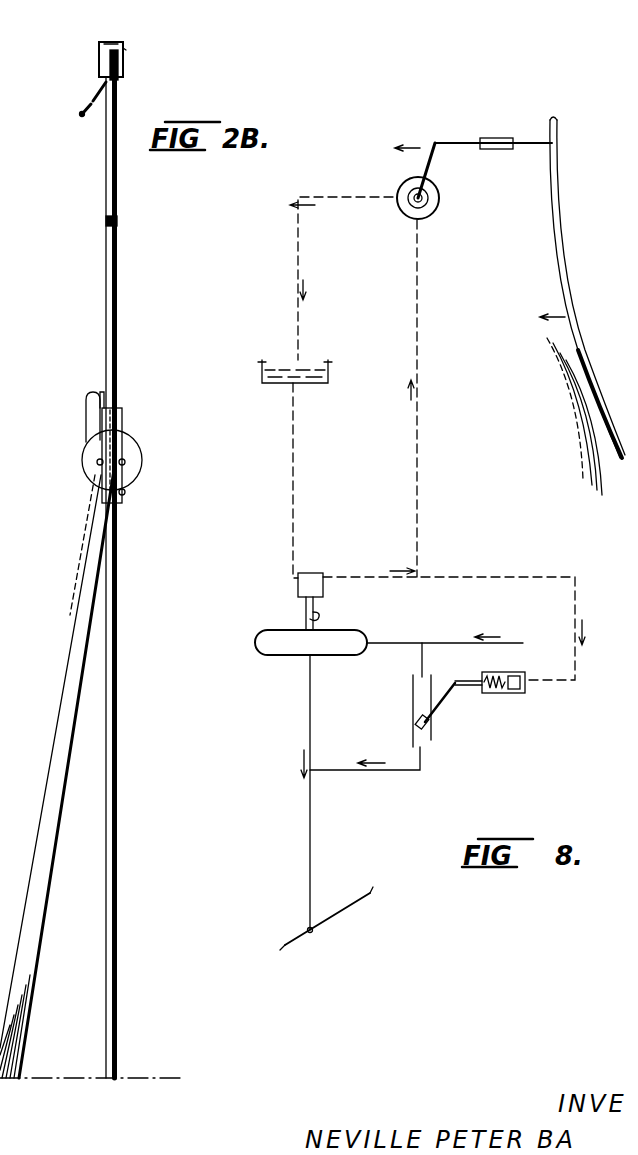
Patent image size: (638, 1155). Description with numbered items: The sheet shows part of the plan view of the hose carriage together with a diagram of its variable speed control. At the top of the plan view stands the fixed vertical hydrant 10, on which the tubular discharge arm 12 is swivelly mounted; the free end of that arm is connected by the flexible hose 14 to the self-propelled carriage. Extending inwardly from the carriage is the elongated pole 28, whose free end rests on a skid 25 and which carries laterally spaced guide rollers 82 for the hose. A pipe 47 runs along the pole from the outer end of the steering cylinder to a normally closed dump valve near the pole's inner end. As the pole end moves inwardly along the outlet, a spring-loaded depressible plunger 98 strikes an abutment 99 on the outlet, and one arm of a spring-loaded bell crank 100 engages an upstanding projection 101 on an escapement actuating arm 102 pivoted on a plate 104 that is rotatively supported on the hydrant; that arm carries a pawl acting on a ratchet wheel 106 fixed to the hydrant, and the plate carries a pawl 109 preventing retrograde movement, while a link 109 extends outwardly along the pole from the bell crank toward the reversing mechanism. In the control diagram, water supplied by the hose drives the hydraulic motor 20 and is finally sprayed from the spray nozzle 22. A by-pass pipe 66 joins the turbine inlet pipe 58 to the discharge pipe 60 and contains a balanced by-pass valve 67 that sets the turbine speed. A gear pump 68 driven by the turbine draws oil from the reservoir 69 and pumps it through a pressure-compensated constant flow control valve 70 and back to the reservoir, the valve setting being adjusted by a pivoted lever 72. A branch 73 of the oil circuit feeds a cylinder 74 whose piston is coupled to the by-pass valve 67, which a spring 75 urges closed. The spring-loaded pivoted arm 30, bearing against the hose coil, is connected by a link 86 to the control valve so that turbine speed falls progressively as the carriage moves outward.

In FIG. 2B, the vertical hydrant 10 is at (124, 48).
In FIG. 2B, the tubular discharge arm 12 is at (106, 192).
In FIG. 2B, the flexible hose 14 is at (114, 727).
In FIG. 8, the flexible hose 14 is at (572, 425).
In FIG. 8, the hydraulic motor 20 is at (295, 655).
In FIG. 8, the spray nozzle 22 is at (333, 915).
In FIG. 2B, the skid 25 is at (135, 455).
In FIG. 2B, the pole 28 is at (60, 727).
In FIG. 8, the spring-loaded pivoted arm 30 is at (562, 252).
In FIG. 2B, the pipe 47 is at (101, 398).
In FIG. 8, the turbine inlet pipe 58 is at (456, 643).
In FIG. 8, the discharge pipe 60 is at (310, 712).
In FIG. 8, the by-pass pipe 66 is at (420, 656).
In FIG. 8, the balanced by-pass valve 67 is at (425, 722).
In FIG. 8, the gear pump 68 is at (323, 590).
In FIG. 8, the reservoir 69 is at (320, 385).
In FIG. 8, the pressure-compensated constant flow control valve 70 is at (430, 200).
In FIG. 8, the pivoted lever 72 is at (432, 170).
In FIG. 8, the control linkage 73 is at (545, 577).
In FIG. 8, the cylinder 74 is at (518, 693).
In FIG. 8, the spring 75 is at (492, 693).
In FIG. 2B, the guide rollers 82 is at (128, 494).
In FIG. 8, the link 86 is at (512, 143).
In FIG. 2B, the spring-loaded depressible plunger 98 is at (122, 410).
In FIG. 2B, the abutment 99 is at (120, 78).
In FIG. 2B, the spring-loaded bell crank 100 is at (88, 428).
In FIG. 2B, the upstanding projection 101 is at (84, 112).
In FIG. 2B, the escapement actuating arm 102 is at (94, 98).
In FIG. 2B, the plate 104 is at (99, 46).
In FIG. 2B, the ratchet wheel 106 is at (108, 44).
In FIG. 2B, the link 109 is at (78, 548).